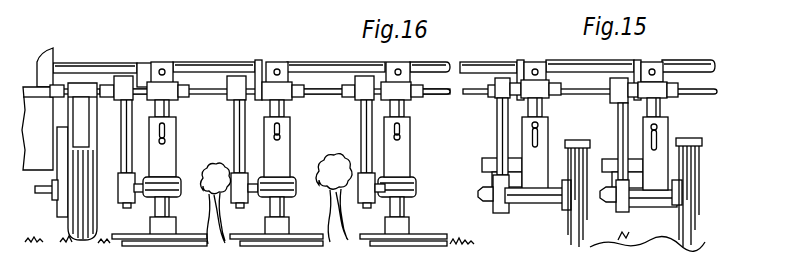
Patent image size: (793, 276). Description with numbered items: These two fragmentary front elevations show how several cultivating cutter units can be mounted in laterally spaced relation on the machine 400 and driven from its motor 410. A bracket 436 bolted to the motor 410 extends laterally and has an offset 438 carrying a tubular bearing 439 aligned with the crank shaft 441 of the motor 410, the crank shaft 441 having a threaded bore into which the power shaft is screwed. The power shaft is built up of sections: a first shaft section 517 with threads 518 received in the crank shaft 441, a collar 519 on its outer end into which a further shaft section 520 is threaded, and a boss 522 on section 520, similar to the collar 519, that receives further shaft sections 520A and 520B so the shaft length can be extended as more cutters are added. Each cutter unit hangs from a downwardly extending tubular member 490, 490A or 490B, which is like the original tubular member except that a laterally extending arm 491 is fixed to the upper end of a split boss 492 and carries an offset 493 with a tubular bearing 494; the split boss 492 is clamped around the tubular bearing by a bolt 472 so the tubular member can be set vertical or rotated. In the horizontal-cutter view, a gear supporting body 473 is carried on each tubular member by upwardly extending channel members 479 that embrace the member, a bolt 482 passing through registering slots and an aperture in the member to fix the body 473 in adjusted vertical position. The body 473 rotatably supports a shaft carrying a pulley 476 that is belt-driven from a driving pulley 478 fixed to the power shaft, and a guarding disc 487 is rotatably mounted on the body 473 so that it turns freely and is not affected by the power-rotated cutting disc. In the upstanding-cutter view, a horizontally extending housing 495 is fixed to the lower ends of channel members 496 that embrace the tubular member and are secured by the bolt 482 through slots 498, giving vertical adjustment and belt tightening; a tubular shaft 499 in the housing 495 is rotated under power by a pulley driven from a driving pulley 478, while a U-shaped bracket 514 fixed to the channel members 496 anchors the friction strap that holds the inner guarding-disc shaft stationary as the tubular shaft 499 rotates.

In FIG. 16, the ground wheel 400 is at (44, 195).
In FIG. 16, the motor 410 is at (40, 63).
In FIG. 16, the bracket 436 is at (122, 64).
In FIG. 16, the offset 438 is at (141, 76).
In FIG. 16, the tubular bearing 439 is at (150, 101).
In FIG. 16, the crank shaft 441 is at (33, 84).
In FIG. 16, the bolt 472 is at (399, 69).
In FIG. 16, the gear supporting body 473 is at (168, 205).
In FIG. 16, the pulley 476 is at (122, 200).
In FIG. 16, the driving pulley 478 is at (115, 82).
In FIG. 16, the channel member 479 is at (173, 155).
In FIG. 16, the bolt 482 is at (167, 140).
In FIG. 16, the guarding disc 487 is at (140, 240).
In FIG. 16, the downwardly extending tubular member 490 is at (169, 108).
In FIG. 15, the downwardly extending tubular member 490 is at (544, 108).
In FIG. 16, the downwardly extending tubular member 490A is at (281, 104).
In FIG. 16, the downwardly extending tubular member 490B is at (404, 110).
In FIG. 16, the laterally extending arm 491 is at (245, 66).
In FIG. 15, the laterally extending arm 491 is at (612, 65).
In FIG. 16, the split boss 492 is at (171, 84).
In FIG. 16, the offset 493 is at (257, 73).
In FIG. 15, the offset 493 is at (638, 64).
In FIG. 16, the tubular bearing 494 is at (257, 101).
In FIG. 15, the horizontally extending housing 495 is at (536, 200).
In FIG. 15, the channel member 496 is at (545, 137).
In FIG. 15, the slot 498 is at (530, 130).
In FIG. 15, the tubular shaft 499 is at (639, 100).
In FIG. 15, the U-shaped bracket 514 is at (483, 168).
In FIG. 16, the shaft section 517 is at (103, 97).
In FIG. 16, the threads 518 is at (50, 97).
In FIG. 16, the collar 519 is at (186, 97).
In FIG. 16, the shaft section 520 is at (212, 90).
In FIG. 15, the shaft section 520 is at (483, 95).
In FIG. 16, the shaft section 520A is at (331, 89).
In FIG. 15, the shaft section 520A is at (583, 88).
In FIG. 16, the shaft section 520B is at (445, 88).
In FIG. 15, the shaft section 520B is at (700, 94).
In FIG. 16, the boss 522 is at (298, 87).